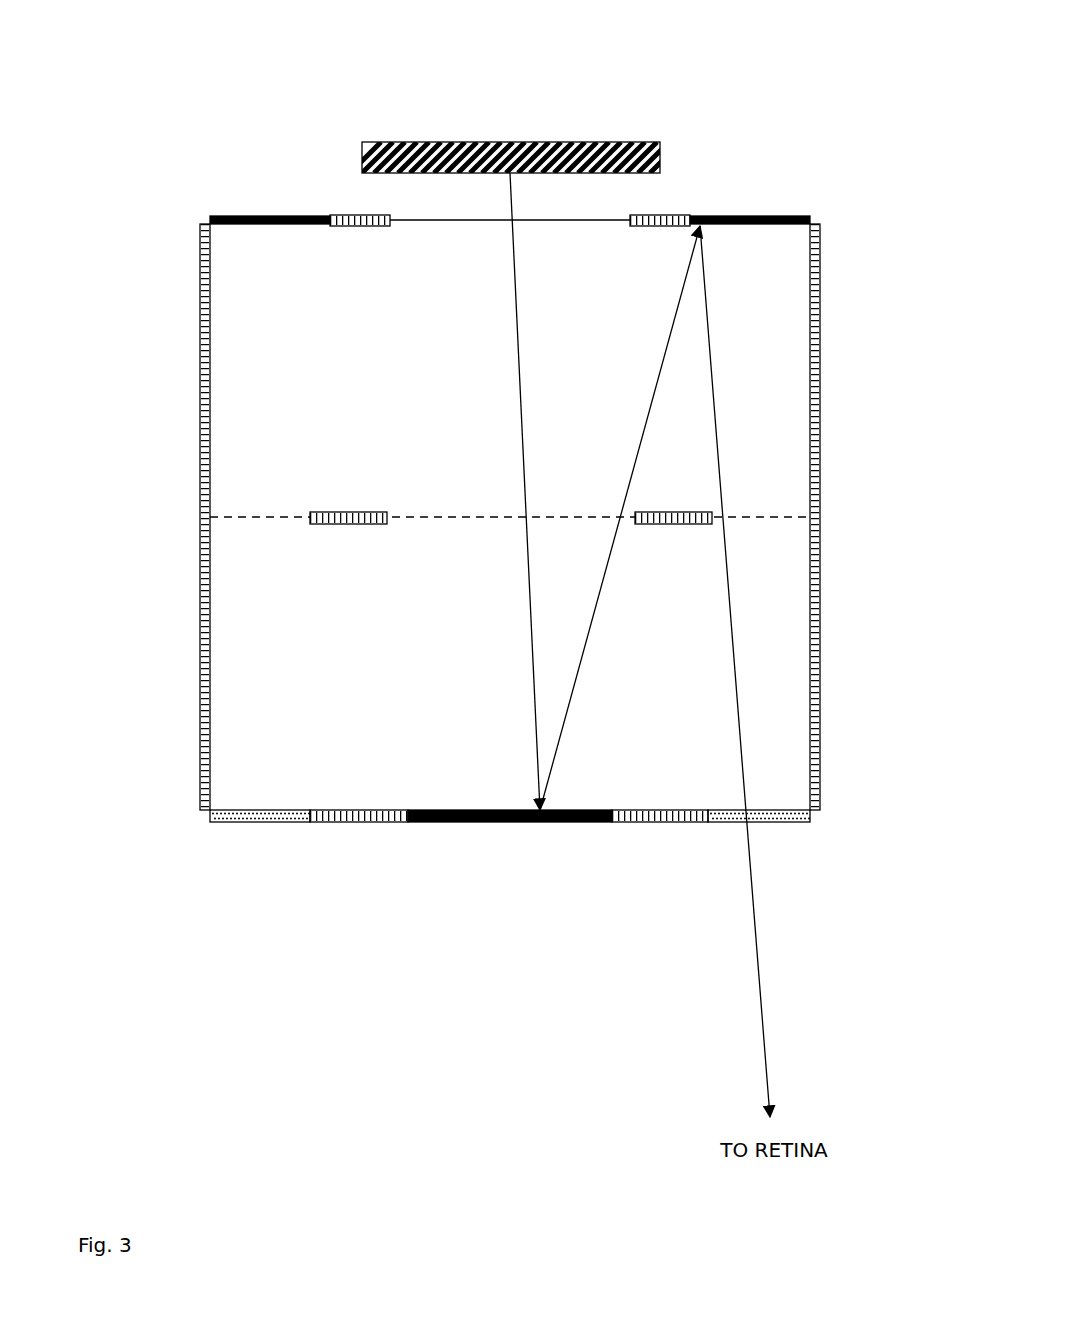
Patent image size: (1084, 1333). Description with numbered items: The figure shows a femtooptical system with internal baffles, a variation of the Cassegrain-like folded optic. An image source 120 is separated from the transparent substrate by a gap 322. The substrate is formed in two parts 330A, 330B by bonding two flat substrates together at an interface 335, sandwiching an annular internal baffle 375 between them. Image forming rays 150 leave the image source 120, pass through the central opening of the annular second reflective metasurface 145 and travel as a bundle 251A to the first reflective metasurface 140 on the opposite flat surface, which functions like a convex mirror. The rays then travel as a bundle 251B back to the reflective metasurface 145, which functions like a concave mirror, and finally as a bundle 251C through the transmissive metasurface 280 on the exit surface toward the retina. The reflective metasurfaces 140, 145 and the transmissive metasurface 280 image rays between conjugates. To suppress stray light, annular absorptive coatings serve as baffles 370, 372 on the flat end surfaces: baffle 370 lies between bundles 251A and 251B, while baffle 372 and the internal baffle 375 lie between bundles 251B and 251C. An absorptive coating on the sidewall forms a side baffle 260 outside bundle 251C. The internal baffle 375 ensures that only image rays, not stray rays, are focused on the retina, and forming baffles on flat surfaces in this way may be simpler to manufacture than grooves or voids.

The image source 120 is at (483, 142).
The second reflective optical metasurface 145 is at (240, 216).
The gap 322 is at (664, 192).
The baffle 370 is at (360, 227).
The side baffle 260 is at (200, 388).
The bundle of rays 251A is at (543, 491).
The bundle of rays 251B is at (620, 518).
The bundle of rays 251C is at (736, 671).
The transparent substrate part 330A is at (510, 370).
The transparent substrate part 330B is at (510, 663).
The interface 335 is at (579, 515).
The internal baffle 375 is at (665, 525).
The first optical metasurface 140 is at (496, 822).
The baffle 372 is at (665, 822).
The transmissive metasurface 280 is at (770, 822).
The image forming rays 150 is at (641, 645).